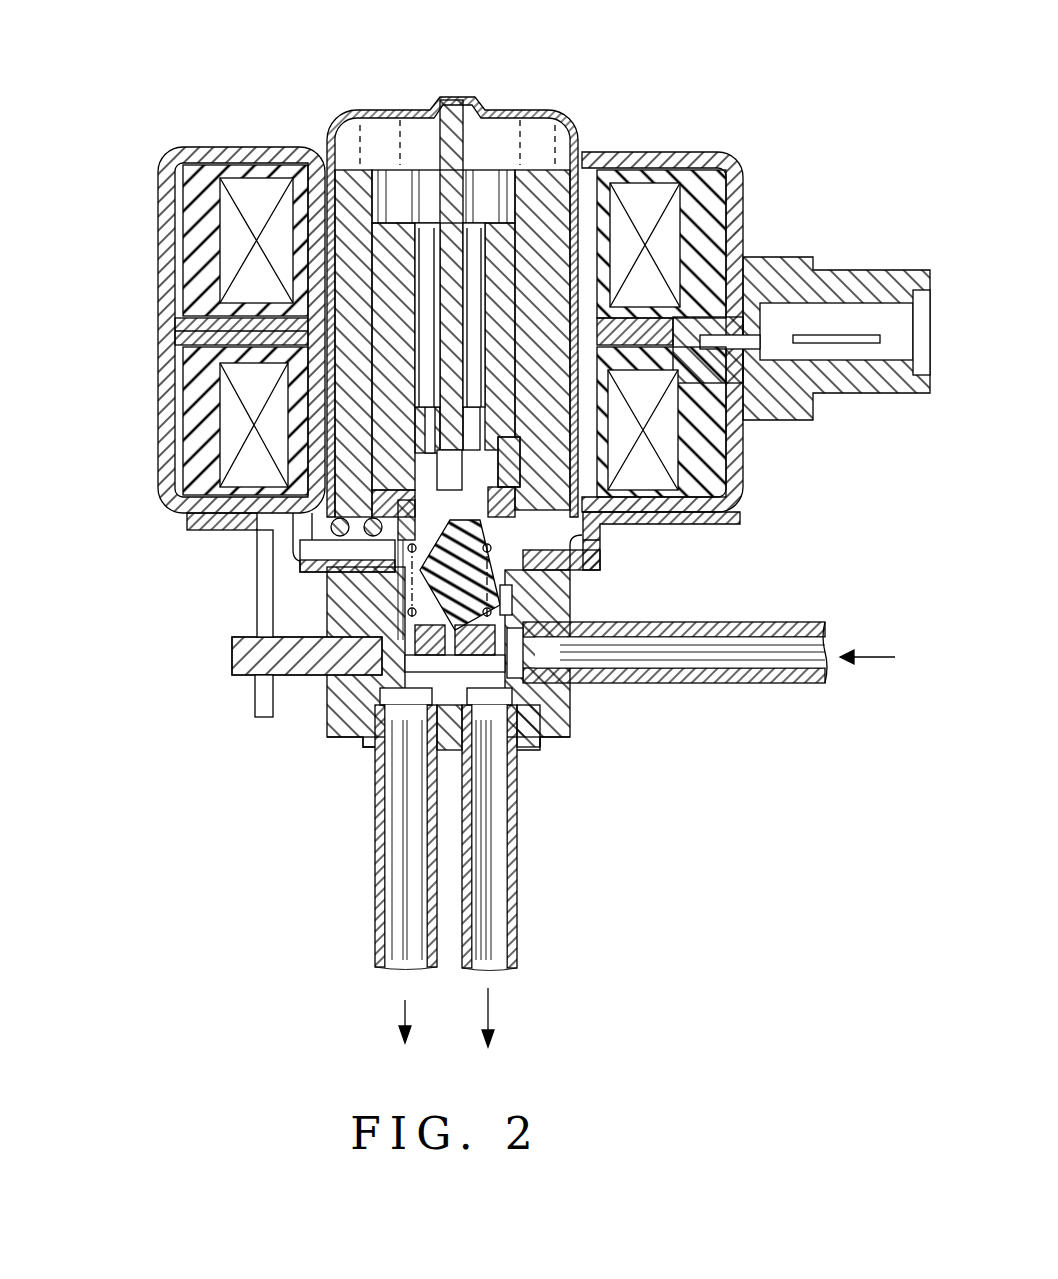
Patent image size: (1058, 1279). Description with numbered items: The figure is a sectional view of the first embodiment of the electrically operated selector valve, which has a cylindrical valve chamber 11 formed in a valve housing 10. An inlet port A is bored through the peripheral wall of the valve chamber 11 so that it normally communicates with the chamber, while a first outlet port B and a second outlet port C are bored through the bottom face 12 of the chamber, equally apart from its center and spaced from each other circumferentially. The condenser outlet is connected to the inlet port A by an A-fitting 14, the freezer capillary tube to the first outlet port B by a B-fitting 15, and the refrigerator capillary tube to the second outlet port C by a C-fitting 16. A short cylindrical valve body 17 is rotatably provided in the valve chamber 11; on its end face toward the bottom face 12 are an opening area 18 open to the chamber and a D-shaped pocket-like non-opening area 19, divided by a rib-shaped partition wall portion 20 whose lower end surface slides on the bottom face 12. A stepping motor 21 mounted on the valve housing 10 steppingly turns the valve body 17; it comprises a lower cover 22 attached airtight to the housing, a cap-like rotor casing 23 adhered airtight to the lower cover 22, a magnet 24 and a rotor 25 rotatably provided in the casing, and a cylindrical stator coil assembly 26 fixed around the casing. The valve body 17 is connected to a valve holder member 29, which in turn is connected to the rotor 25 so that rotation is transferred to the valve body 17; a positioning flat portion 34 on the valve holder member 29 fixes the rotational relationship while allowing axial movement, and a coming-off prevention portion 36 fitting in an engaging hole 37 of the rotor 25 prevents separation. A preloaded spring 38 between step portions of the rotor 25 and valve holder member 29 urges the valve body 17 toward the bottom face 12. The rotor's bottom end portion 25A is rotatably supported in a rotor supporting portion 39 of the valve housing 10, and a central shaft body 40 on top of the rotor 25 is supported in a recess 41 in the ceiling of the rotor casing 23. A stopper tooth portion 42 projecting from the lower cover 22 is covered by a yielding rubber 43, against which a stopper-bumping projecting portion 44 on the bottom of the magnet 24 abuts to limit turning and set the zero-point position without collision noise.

The valve housing 10 is at (545, 580).
The valve chamber 11 is at (330, 630).
The bottom face 12 is at (255, 655).
The A-fitting 14 is at (735, 622).
The B-fitting 15 is at (520, 875).
The C-fitting 16 is at (373, 880).
The valve body 17 is at (360, 605).
The opening area 18 is at (560, 670).
The non-opening area 19 is at (515, 760).
The partition wall portion 20 is at (520, 735).
The stepping motor 21 is at (580, 114).
The lower cover 22 is at (540, 562).
The rotor casing 23 is at (503, 112).
The magnet 24 is at (352, 245).
The rotor 25 is at (400, 365).
The bottom end portion 25A is at (545, 540).
The stator coil assembly 26 is at (648, 198).
The valve holder member 29 is at (560, 600).
The positioning flat portion 34 is at (405, 598).
The coming-off prevention portion 36 is at (655, 452).
The engaging hole 37 is at (440, 528).
The spring 38 is at (580, 535).
The rotor supporting portion 39 is at (345, 585).
The central shaft body 40 is at (480, 130).
The recess 41 is at (413, 150).
The stopper tooth portion 42 is at (165, 500).
The yielding rubber 43 is at (395, 510).
The stopper-bumping projecting portion 44 is at (345, 520).
The inlet port A is at (560, 628).
The first outlet port B is at (548, 705).
The second outlet port C is at (400, 712).